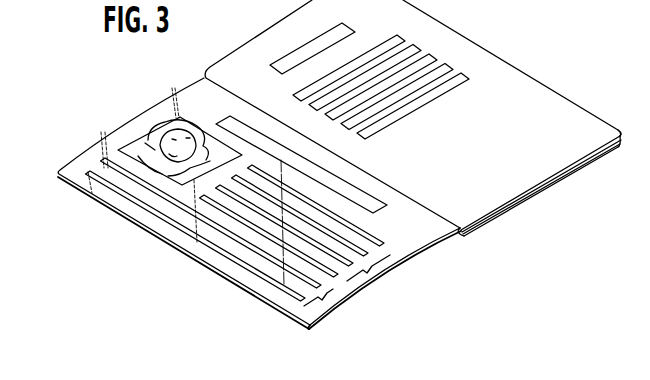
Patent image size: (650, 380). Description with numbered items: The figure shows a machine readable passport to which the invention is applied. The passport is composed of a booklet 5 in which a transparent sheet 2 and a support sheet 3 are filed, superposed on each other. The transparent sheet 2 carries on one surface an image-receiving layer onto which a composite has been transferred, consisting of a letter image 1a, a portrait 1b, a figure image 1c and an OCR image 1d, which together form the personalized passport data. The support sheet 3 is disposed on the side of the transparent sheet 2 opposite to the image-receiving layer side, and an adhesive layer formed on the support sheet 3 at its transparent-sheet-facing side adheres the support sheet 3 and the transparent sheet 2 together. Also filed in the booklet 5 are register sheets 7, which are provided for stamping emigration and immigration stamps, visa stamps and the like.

The letter image 1a is at (378, 274).
The portrait 1b is at (146, 133).
The figure image 1c is at (388, 206).
The OCR image 1d is at (323, 303).
The transparent sheet 2 is at (62, 166).
The support sheet 3 is at (136, 221).
The booklet 5 is at (488, 228).
The register sheets 7 is at (543, 193).